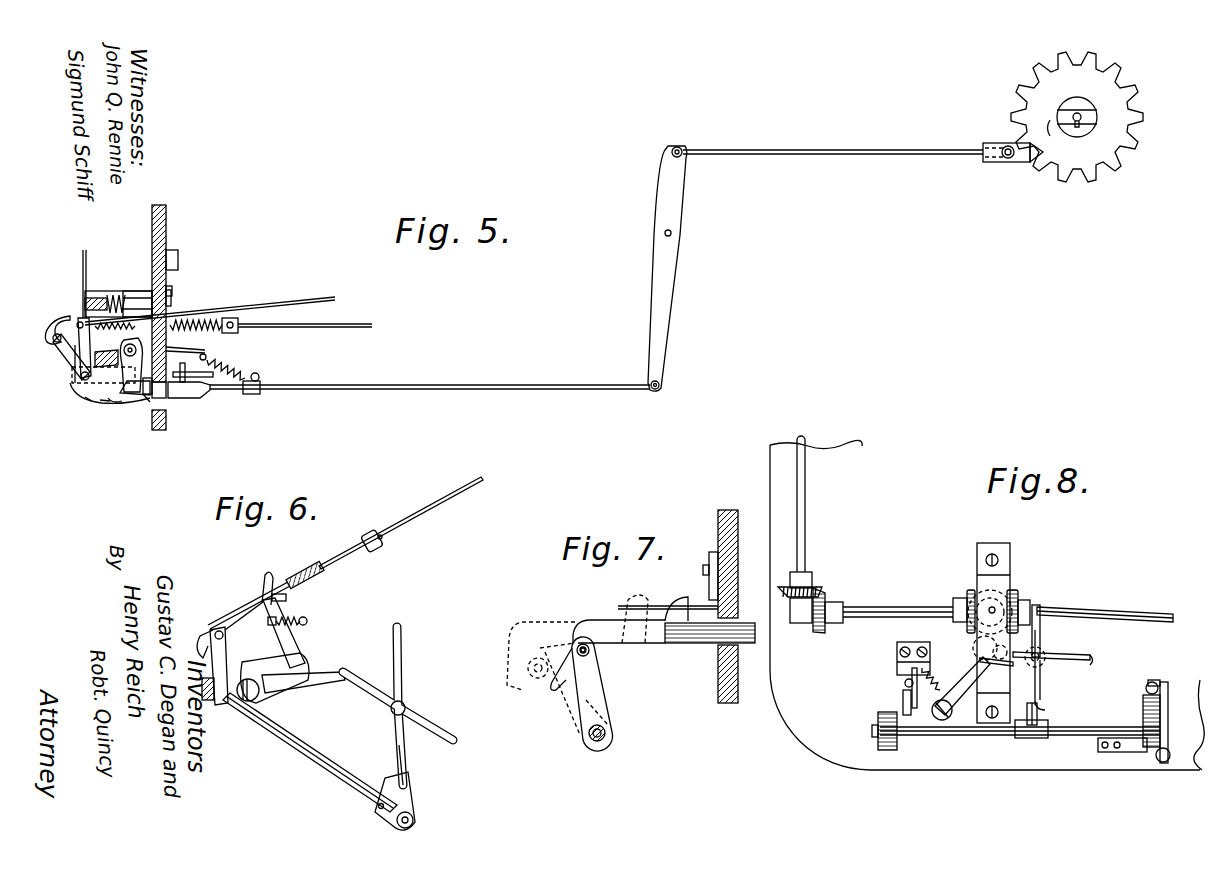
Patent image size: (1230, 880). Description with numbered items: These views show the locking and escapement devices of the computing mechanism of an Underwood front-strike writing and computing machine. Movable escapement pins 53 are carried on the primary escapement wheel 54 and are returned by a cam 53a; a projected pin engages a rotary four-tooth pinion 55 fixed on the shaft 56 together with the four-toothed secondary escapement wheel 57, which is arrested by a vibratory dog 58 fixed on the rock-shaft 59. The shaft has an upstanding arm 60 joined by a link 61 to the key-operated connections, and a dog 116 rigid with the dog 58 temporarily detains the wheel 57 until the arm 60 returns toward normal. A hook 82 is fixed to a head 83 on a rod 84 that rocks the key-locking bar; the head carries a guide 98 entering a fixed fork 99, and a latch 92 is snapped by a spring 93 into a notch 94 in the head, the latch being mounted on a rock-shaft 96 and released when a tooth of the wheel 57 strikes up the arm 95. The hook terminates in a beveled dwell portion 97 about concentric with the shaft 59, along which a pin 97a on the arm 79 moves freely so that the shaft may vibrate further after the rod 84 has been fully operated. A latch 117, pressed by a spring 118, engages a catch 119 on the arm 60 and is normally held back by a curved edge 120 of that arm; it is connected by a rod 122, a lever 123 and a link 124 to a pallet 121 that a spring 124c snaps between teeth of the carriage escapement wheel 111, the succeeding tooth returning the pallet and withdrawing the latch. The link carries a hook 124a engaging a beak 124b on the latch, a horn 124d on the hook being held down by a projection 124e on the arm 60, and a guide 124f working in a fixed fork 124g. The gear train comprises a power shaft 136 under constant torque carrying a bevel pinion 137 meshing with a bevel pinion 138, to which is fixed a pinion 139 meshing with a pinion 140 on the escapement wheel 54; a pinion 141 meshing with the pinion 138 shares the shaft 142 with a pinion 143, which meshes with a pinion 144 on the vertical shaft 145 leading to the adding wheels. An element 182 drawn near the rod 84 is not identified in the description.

In FIG. 8, the escapement pins 53 is at (1042, 690).
In FIG. 5, the cam 53a is at (172, 252).
In FIG. 8, the primary escapement wheel 54 is at (1041, 615).
In FIG. 5, the four-tooth pinion 55 is at (168, 290).
In FIG. 8, the four-tooth pinion 55 is at (1050, 655).
In FIG. 5, the shaft 56 is at (112, 291).
In FIG. 8, the shaft 56 is at (1000, 695).
In FIG. 5, the secondary escapement wheel 57 is at (85, 252).
In FIG. 6, the secondary escapement wheel 57 is at (388, 702).
In FIG. 8, the secondary escapement wheel 57 is at (1082, 663).
In FIG. 5, the vibratory dog 58 is at (88, 401).
In FIG. 6, the vibratory dog 58 is at (386, 785).
In FIG. 8, the vibratory dog 58 is at (1040, 722).
In FIG. 5, the rock-shaft 59 is at (124, 346).
In FIG. 6, the rock-shaft 59 is at (305, 753).
In FIG. 7, the rock-shaft 59 is at (590, 742).
In FIG. 8, the rock-shaft 59 is at (1000, 736).
In FIG. 5, the upstanding arm 60 is at (72, 386).
In FIG. 8, the upstanding arm 60 is at (1168, 705).
In FIG. 5, the link 61 is at (292, 304).
In FIG. 8, the link 61 is at (1153, 682).
In FIG. 5, the arm 79 is at (66, 352).
In FIG. 7, the arm 79 is at (608, 700).
In FIG. 8, the arm 79 is at (915, 720).
In FIG. 5, the hook 82 is at (68, 316).
In FIG. 6, the hook 82 is at (213, 624).
In FIG. 7, the hook 82 is at (572, 632).
In FIG. 8, the hook 82 is at (903, 698).
In FIG. 6, the head 83 is at (308, 573).
In FIG. 7, the head 83 is at (690, 645).
In FIG. 5, the rod 84 is at (305, 316).
In FIG. 6, the rod 84 is at (440, 503).
In FIG. 6, the latch 92 is at (292, 645).
In FIG. 8, the latch 92 is at (905, 690).
In FIG. 6, the spring 93 is at (308, 620).
In FIG. 8, the spring 93 is at (920, 665).
In FIG. 6, the notch 94 is at (287, 597).
In FIG. 6, the arm 95 is at (296, 684).
In FIG. 8, the arm 95 is at (966, 690).
In FIG. 6, the rock-shaft 96 is at (266, 678).
In FIG. 8, the rock-shaft 96 is at (945, 722).
In FIG. 5, the beveled dwell portion 97 is at (66, 315).
In FIG. 6, the beveled dwell portion 97 is at (200, 642).
In FIG. 7, the beveled dwell portion 97 is at (566, 692).
In FIG. 6, the pin 97a is at (224, 636).
In FIG. 7, the pin 97a is at (592, 652).
In FIG. 8, the pin 97a is at (975, 668).
In FIG. 5, the guide 98 is at (171, 294).
In FIG. 6, the guide 98 is at (262, 585).
In FIG. 7, the guide 98 is at (683, 596).
In FIG. 8, the guide 98 is at (912, 680).
In FIG. 5, the fixed fork 99 is at (137, 291).
In FIG. 7, the fixed fork 99 is at (630, 606).
In FIG. 8, the fixed fork 99 is at (905, 684).
In FIG. 5, the escapement wheel 111 is at (1027, 103).
In FIG. 6, the dog 116 is at (415, 788).
In FIG. 8, the dog 116 is at (1025, 740).
In FIG. 5, the latch 117 is at (189, 354).
In FIG. 8, the latch 117 is at (1165, 725).
In FIG. 5, the spring 118 is at (160, 398).
In FIG. 8, the spring 118 is at (1130, 748).
In FIG. 5, the catch 119 is at (120, 404).
In FIG. 5, the curved edge 120 is at (103, 369).
In FIG. 5, the pallet 121 is at (1005, 163).
In FIG. 5, the rod 122 is at (810, 151).
In FIG. 5, the lever 123 is at (668, 297).
In FIG. 5, the link 124 is at (446, 386).
In FIG. 5, the hook 124a is at (132, 396).
In FIG. 8, the hook 124a is at (1162, 763).
In FIG. 5, the beak 124b is at (146, 402).
In FIG. 5, the spring 124c is at (252, 375).
In FIG. 5, the horn 124d is at (87, 402).
In FIG. 5, the projection 124e is at (105, 404).
In FIG. 5, the guide 124f is at (206, 355).
In FIG. 5, the fixed fork 124g is at (196, 398).
In FIG. 8, the power shaft 136 is at (1140, 600).
In FIG. 8, the bevel pinion 137 is at (1019, 600).
In FIG. 8, the bevel pinion 138 is at (1010, 585).
In FIG. 8, the pinion 139 is at (1003, 575).
In FIG. 8, the pinion 140 is at (1038, 648).
In FIG. 8, the pinion 141 is at (968, 592).
In FIG. 8, the shaft 142 is at (898, 610).
In FIG. 8, the pinion 143 is at (827, 598).
In FIG. 8, the pinion 144 is at (818, 590).
In FIG. 8, the vertical shaft 145 is at (806, 496).
In FIG. 5, the spring 182 is at (205, 322).